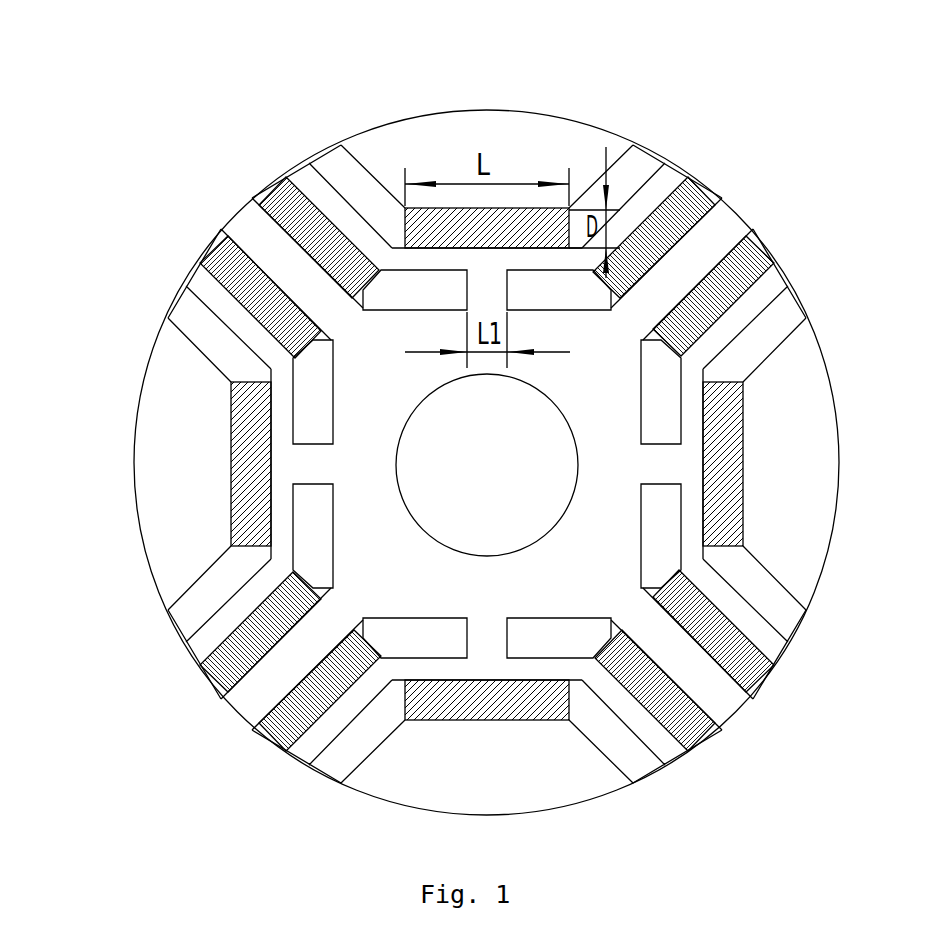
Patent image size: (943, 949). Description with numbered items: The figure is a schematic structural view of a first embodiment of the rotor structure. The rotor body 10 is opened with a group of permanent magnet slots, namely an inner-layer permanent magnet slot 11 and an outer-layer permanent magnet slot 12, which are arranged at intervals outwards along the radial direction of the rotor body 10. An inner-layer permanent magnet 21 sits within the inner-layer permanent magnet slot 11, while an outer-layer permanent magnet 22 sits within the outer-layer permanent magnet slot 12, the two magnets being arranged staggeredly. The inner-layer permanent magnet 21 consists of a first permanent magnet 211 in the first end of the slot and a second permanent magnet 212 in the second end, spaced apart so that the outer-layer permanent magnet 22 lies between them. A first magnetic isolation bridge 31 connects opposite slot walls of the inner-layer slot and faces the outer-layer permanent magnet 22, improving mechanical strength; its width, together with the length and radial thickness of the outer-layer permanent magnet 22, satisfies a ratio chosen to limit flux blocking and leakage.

The rotor body 10 is at (524, 154).
The inner-layer permanent magnet slot 11 is at (222, 318).
The outer-layer permanent magnet slot 12 is at (636, 176).
The inner-layer permanent magnet 21 is at (443, 187).
The outer-layer permanent magnet 22 is at (404, 216).
The first permanent magnet 211 is at (386, 253).
The second permanent magnet 212 is at (705, 210).
The first magnetic isolation bridge 31 is at (383, 296).